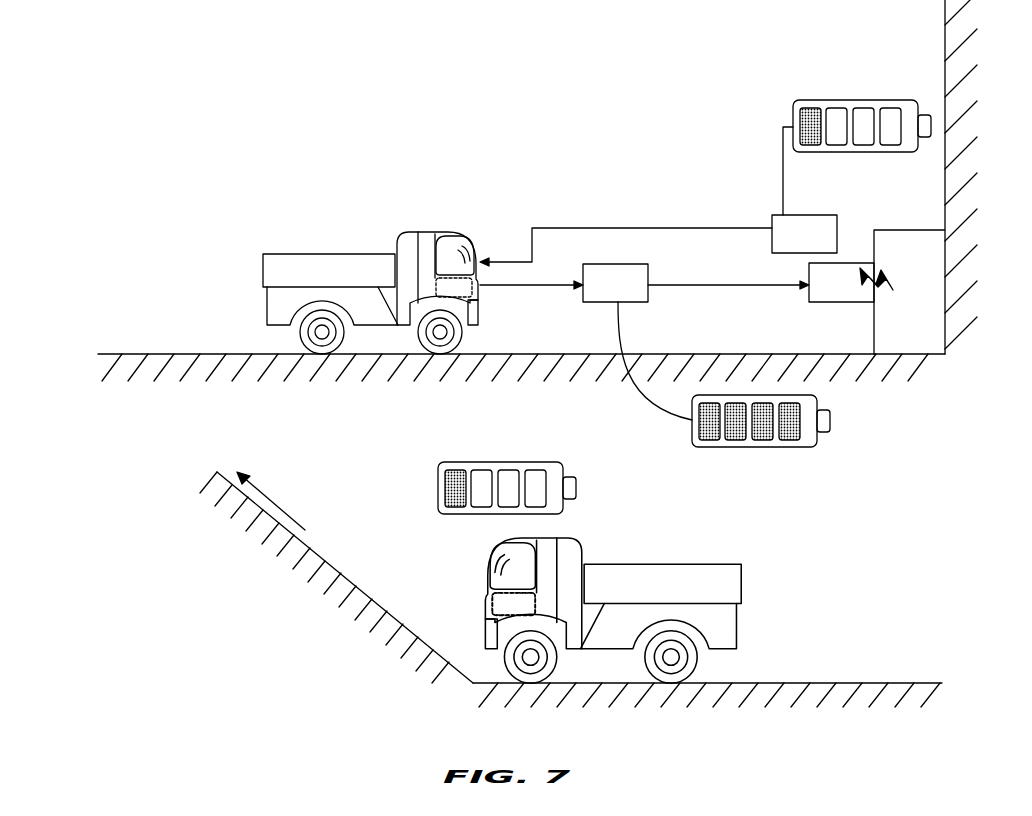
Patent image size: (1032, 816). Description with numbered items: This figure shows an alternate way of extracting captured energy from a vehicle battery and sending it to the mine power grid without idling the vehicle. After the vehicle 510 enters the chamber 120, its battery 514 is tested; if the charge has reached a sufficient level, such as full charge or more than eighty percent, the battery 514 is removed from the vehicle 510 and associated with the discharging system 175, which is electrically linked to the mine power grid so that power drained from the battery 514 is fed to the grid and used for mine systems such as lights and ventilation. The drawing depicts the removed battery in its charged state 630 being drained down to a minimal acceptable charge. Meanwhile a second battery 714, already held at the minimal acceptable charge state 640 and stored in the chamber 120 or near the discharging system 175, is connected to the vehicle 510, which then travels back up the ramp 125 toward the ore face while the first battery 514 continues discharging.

The chamber 120 is at (743, 162).
The ramp 125 is at (343, 577).
The discharging system 175 is at (938, 240).
The vehicle 510 is at (350, 264).
The battery 514 is at (480, 313).
The charged battery 630 is at (798, 450).
The minimal acceptable charge state 640 is at (863, 99).
The second battery 714 is at (815, 238).